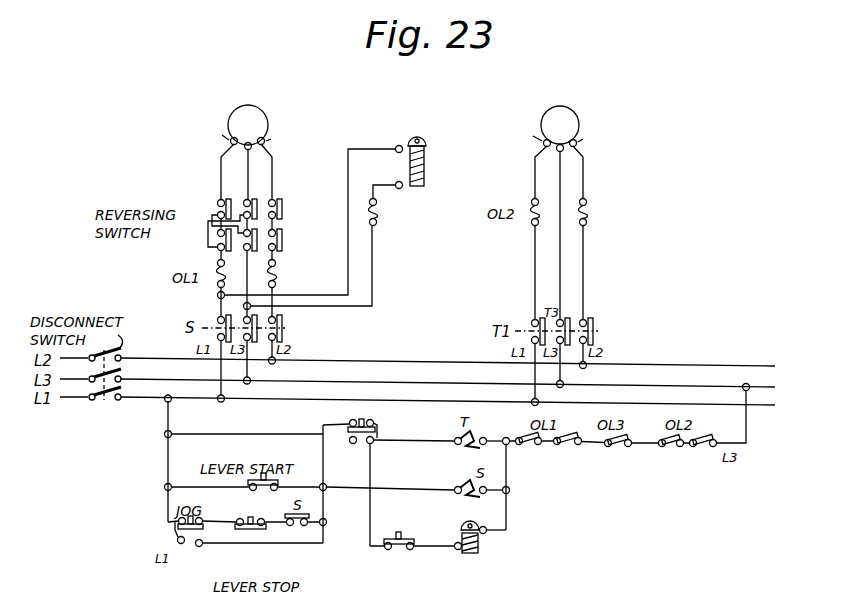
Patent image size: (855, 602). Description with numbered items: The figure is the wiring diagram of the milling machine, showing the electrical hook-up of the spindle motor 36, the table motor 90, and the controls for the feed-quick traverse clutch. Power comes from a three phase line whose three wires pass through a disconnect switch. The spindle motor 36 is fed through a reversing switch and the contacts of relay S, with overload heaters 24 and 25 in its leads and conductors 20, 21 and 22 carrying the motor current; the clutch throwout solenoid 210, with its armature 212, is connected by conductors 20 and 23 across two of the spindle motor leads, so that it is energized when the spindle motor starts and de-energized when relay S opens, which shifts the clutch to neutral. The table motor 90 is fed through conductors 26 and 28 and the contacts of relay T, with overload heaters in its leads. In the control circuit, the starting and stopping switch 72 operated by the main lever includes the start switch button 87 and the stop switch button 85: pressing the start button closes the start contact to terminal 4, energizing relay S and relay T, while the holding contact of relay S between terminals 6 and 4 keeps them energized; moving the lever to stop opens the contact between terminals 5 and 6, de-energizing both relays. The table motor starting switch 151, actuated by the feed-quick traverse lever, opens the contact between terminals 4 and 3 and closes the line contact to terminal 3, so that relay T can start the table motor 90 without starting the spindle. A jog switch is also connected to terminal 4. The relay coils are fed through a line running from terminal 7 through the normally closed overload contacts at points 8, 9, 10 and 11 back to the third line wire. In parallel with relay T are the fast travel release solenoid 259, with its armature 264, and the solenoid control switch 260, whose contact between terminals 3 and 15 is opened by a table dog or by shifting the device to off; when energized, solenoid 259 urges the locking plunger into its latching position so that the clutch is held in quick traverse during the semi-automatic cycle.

The electric motor 36 is at (249, 116).
The electric motor 90 is at (560, 116).
The armature 212 is at (417, 138).
The solenoid 210 is at (430, 168).
The overload heater 24 is at (210, 268).
The overload heater 25 is at (284, 269).
The conductor 20 is at (299, 222).
The conductor 21 is at (313, 276).
The conductor 22 is at (287, 305).
The conductor 23 is at (392, 204).
The conductor 26 is at (523, 260).
The conductor 28 is at (594, 260).
The start switch button 87 is at (264, 475).
The table motor starting switch 151 is at (362, 446).
The starting and stopping switch 72 is at (306, 524).
The stop switch button 85 is at (247, 530).
The armature 264 is at (487, 527).
The solenoid 259 is at (488, 550).
The solenoid control switch 260 is at (404, 555).
The contact terminal 3 is at (410, 484).
The contact terminal 4 is at (322, 484).
The contact terminal 5 is at (226, 531).
The contact terminal 6 is at (276, 531).
The conductor 7 is at (504, 500).
The conductor 8 is at (544, 456).
The conductor 9 is at (590, 456).
The conductor 10 is at (639, 457).
The conductor 11 is at (685, 457).
The contact terminal 15 is at (434, 560).